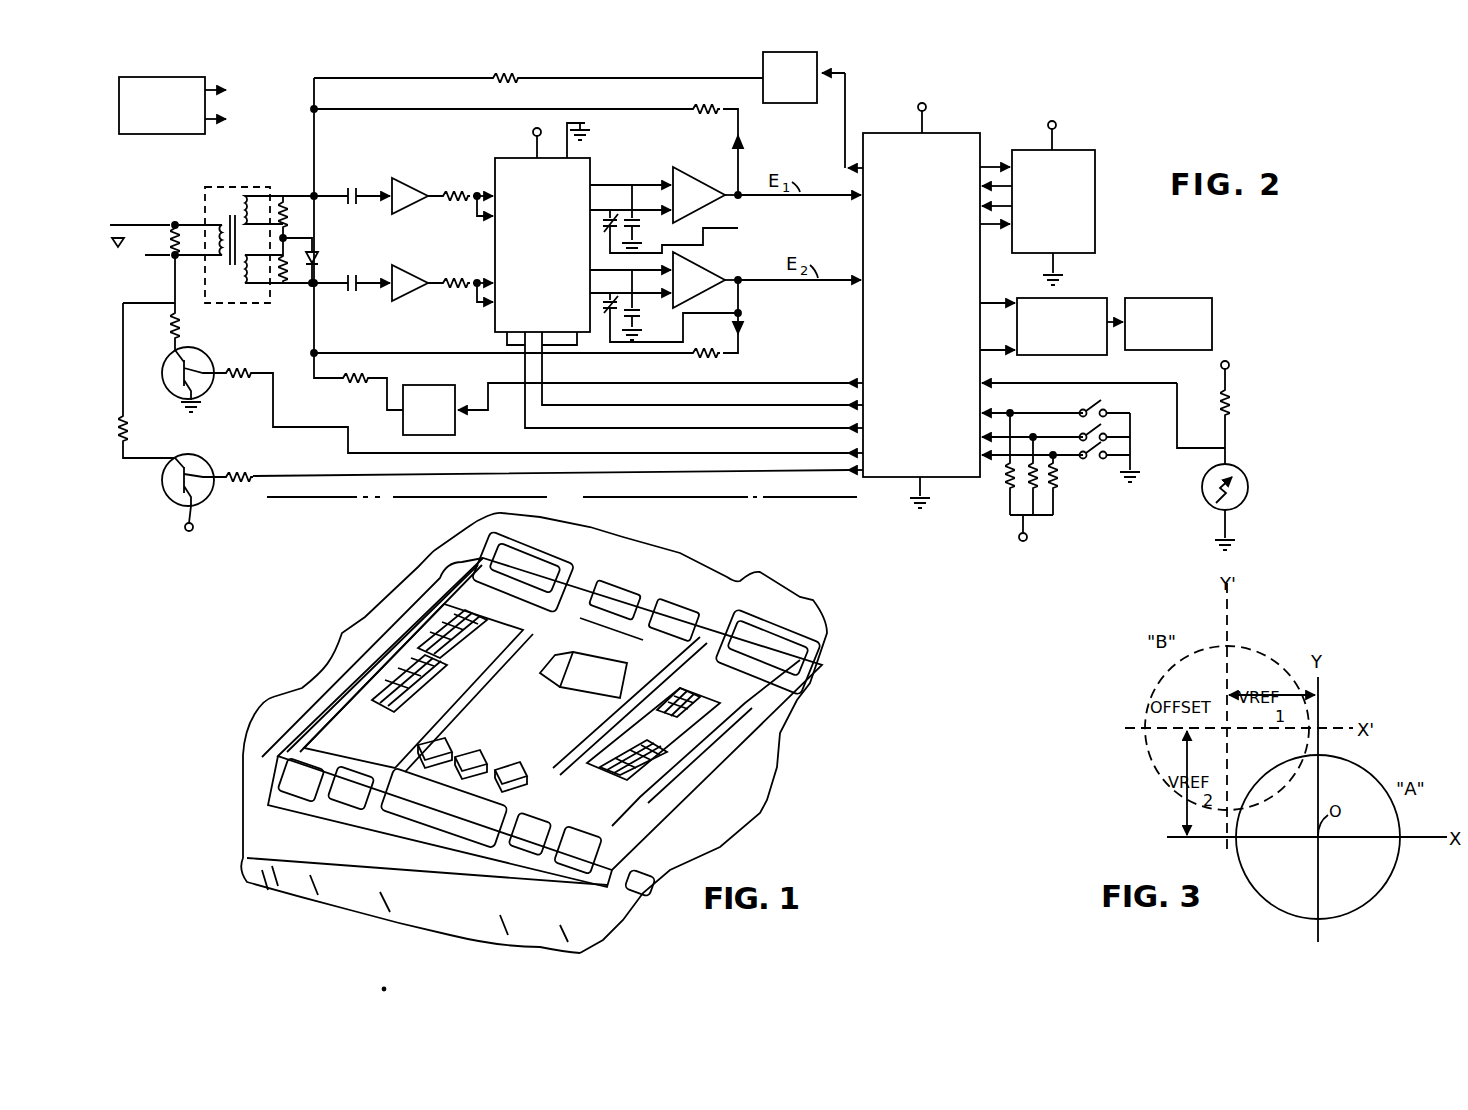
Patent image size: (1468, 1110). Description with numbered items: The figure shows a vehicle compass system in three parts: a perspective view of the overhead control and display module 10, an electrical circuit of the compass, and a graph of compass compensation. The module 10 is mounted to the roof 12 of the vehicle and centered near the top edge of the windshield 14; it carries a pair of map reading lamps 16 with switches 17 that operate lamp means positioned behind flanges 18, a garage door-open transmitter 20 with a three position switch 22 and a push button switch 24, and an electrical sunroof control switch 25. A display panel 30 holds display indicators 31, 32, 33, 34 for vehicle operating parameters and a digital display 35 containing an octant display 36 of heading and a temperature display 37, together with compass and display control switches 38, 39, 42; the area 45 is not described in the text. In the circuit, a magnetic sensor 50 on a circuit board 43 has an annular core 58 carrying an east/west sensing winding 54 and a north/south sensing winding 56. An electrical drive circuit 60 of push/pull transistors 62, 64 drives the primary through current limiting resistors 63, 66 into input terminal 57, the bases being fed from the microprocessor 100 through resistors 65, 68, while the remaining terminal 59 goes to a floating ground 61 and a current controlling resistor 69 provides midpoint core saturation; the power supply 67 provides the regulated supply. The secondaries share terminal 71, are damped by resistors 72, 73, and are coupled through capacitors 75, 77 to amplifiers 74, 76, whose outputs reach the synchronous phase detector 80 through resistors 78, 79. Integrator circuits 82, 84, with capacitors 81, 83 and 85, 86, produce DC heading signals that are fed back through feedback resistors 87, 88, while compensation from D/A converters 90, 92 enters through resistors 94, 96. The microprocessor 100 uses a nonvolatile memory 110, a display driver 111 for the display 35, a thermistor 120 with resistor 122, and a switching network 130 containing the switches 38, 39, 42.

In FIG. 1, the control and display module 10 is at (312, 682).
In FIG. 1, the roof 12 is at (728, 578).
In FIG. 1, the windshield 14 is at (300, 905).
In FIG. 1, the map reading lamps 16 is at (466, 608).
In FIG. 1, the switches 17 is at (530, 600).
In FIG. 1, the flanges 18 is at (390, 712).
In FIG. 1, the garage door-open transmitter 20 is at (650, 608).
In FIG. 1, the three position switch 22 is at (692, 617).
In FIG. 1, the push button switch 24 is at (604, 613).
In FIG. 1, the electrical sunroof control switch 25 is at (566, 690).
In FIG. 1, the display panel 30 is at (377, 818).
In FIG. 1, the display indicator 31 is at (298, 800).
In FIG. 1, the display indicator 32 is at (345, 808).
In FIG. 1, the display indicator 33 is at (538, 850).
In FIG. 1, the display indicator 34 is at (585, 868).
In FIG. 2, the digital display 35 is at (1162, 298).
In FIG. 1, the digital display 35 is at (440, 820).
In FIG. 1, the octant display 36 is at (490, 830).
In FIG. 1, the temperature display 37 is at (395, 815).
In FIG. 2, the English/Metric display format switch 38 is at (1093, 460).
In FIG. 1, the English/Metric display format switch 38 is at (478, 738).
In FIG. 2, the variation correction switch 39 is at (1095, 433).
In FIG. 1, the variation correction switch 39 is at (516, 750).
In FIG. 2, the display on/off switch 42 is at (1096, 407).
In FIG. 1, the display on/off switch 42 is at (555, 762).
In FIG. 2, the circuit board 43 is at (585, 496).
In FIG. 1, the panel area 45 is at (527, 699).
In FIG. 2, the magnetic sensor 50 is at (210, 185).
In FIG. 2, the secondary east/west sensing winding 54 is at (248, 273).
In FIG. 2, the north/south sensing winding 56 is at (252, 196).
In FIG. 2, the input terminal 57 is at (177, 260).
In FIG. 2, the annular core 58 is at (222, 226).
In FIG. 2, the remaining terminal 59 is at (177, 223).
In FIG. 2, the electrical drive circuit 60 is at (170, 447).
In FIG. 2, the floating ground 61 is at (318, 257).
In FIG. 2, the NPN transistor 62 is at (205, 357).
In FIG. 2, the current limiting resistor 63 is at (180, 316).
In FIG. 2, the PNP transistor 64 is at (201, 463).
In FIG. 2, the resistor 65 is at (250, 368).
In FIG. 2, the current limiting resistor 66 is at (151, 385).
In FIG. 2, the power supply 67 is at (172, 136).
In FIG. 2, the resistor 68 is at (226, 475).
In FIG. 2, the current controlling resistor 69 is at (170, 242).
In FIG. 2, the terminal 71 is at (286, 236).
In FIG. 2, the damping resistor 72 is at (289, 213).
In FIG. 2, the damping resistor 73 is at (295, 260).
In FIG. 2, the amplifier 74 is at (411, 277).
In FIG. 2, the coupling capacitor 75 is at (361, 272).
In FIG. 2, the amplifier 76 is at (411, 187).
In FIG. 2, the coupling capacitor 77 is at (361, 182).
In FIG. 2, the resistor 78 is at (446, 193).
In FIG. 2, the resistor 79 is at (446, 285).
In FIG. 2, the synchronous phase detector 80 is at (500, 158).
In FIG. 2, the integrating capacitor 81 is at (668, 219).
In FIG. 2, the integrator circuit 82 is at (724, 188).
In FIG. 2, the integrating capacitor 83 is at (641, 224).
In FIG. 2, the integrator circuit 84 is at (735, 278).
In FIG. 2, the capacitor 85 is at (669, 306).
In FIG. 2, the capacitor 86 is at (641, 316).
In FIG. 2, the feedback resistor 87 is at (722, 348).
In FIG. 2, the feedback resistor 88 is at (706, 112).
In FIG. 2, the D/A converter 90 is at (455, 430).
In FIG. 2, the D/A converter 92 is at (817, 100).
In FIG. 2, the resistor 94 is at (350, 378).
In FIG. 2, the resistor 96 is at (522, 80).
In FIG. 2, the microprocessor 100 is at (965, 133).
In FIG. 2, the nonvolatile memory 110 is at (1095, 215).
In FIG. 2, the display driver 111 is at (1079, 298).
In FIG. 2, the thermistor 120 is at (1204, 498).
In FIG. 2, the resistor 122 is at (1230, 410).
In FIG. 2, the switching network 130 is at (1003, 484).